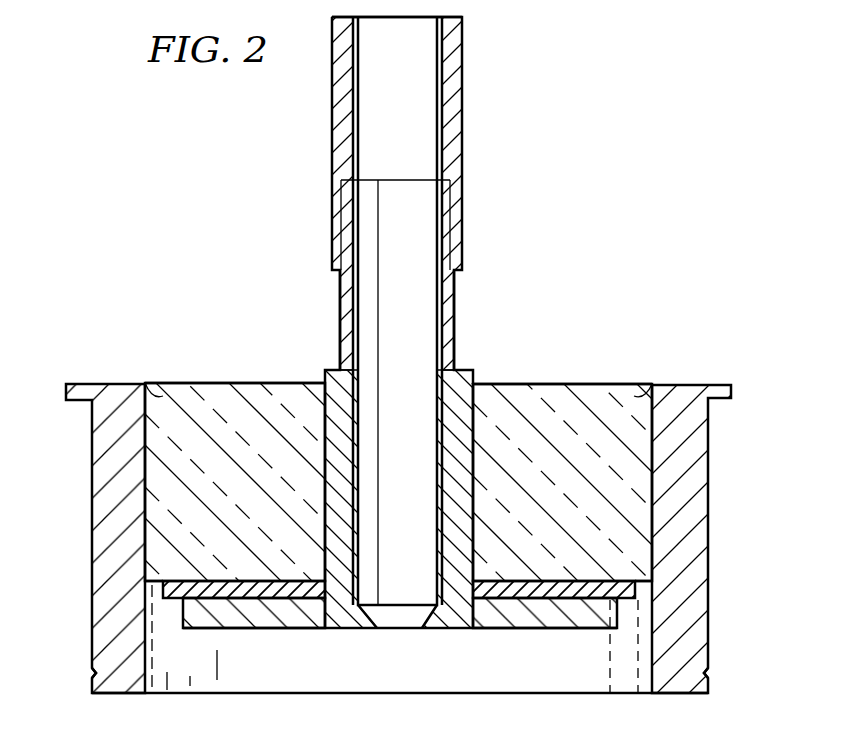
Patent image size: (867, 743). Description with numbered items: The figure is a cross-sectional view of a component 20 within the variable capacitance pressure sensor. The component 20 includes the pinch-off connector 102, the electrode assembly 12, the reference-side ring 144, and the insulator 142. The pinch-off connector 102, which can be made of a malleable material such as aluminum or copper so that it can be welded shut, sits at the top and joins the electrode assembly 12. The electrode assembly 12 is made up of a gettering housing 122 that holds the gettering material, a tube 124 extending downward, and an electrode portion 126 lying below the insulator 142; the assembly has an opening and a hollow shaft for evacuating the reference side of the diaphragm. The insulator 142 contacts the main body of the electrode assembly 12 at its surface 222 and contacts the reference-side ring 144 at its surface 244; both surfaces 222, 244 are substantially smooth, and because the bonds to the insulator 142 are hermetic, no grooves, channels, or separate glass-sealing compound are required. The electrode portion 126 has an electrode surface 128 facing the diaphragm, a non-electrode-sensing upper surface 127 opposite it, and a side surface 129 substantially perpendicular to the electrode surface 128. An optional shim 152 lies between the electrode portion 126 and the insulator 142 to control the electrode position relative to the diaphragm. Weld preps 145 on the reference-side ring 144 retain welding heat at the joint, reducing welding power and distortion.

The electrode assembly 12 is at (494, 336).
The component 20 is at (621, 124).
The pinch-off connector 102 is at (453, 57).
The tube 124 is at (462, 302).
The gettering housing 122 is at (466, 425).
The insulator 142 is at (241, 390).
The reference-side ring 144 is at (115, 388).
The surface of the reference-side ring 244 is at (152, 388).
The surface of the electrode assembly 222 is at (325, 470).
The non-electrode-sensing surface 127 is at (565, 585).
The electrode portion 126 is at (290, 629).
The electrode surface 128 is at (512, 629).
The side surface 129 is at (618, 618).
The shim 152 is at (180, 600).
The weld preps 145 is at (92, 676).